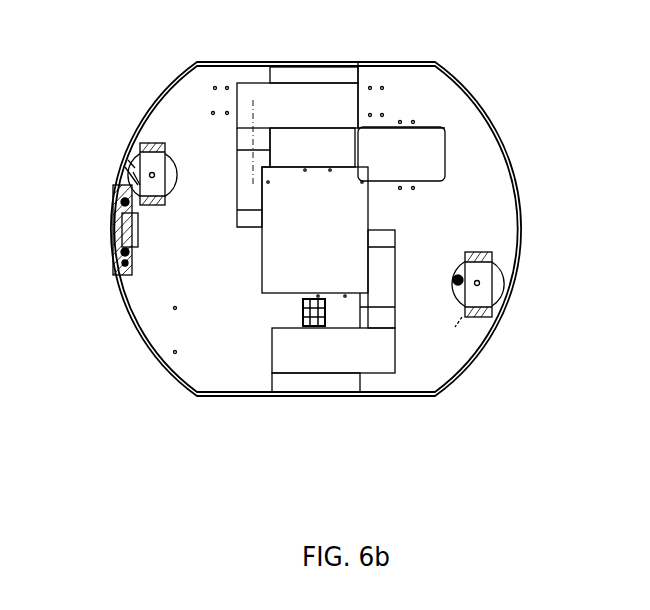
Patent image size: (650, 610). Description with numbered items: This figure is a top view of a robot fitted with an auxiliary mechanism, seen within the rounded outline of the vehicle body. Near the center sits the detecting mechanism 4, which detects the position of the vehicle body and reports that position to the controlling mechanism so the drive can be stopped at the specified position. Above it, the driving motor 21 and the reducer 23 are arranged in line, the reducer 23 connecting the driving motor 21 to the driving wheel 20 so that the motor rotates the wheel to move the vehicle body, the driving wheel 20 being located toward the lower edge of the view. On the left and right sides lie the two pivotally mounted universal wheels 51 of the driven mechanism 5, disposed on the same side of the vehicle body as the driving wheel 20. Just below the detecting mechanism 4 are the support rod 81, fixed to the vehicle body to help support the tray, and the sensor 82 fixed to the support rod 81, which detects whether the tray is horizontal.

The driving wheel 20 is at (312, 382).
The driving motor 21 is at (252, 188).
The reducer 23 is at (303, 112).
The detecting mechanism 4 is at (328, 220).
The driven mechanism 5 is at (516, 264).
The universal wheel 51 is at (470, 258).
The support rod 81 is at (303, 323).
The sensor 82 is at (315, 322).